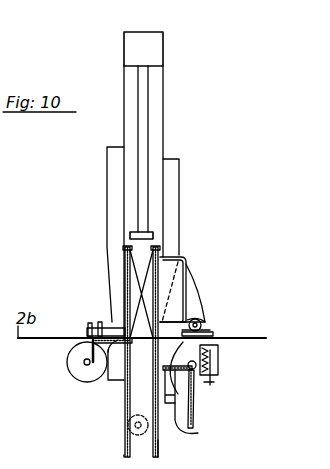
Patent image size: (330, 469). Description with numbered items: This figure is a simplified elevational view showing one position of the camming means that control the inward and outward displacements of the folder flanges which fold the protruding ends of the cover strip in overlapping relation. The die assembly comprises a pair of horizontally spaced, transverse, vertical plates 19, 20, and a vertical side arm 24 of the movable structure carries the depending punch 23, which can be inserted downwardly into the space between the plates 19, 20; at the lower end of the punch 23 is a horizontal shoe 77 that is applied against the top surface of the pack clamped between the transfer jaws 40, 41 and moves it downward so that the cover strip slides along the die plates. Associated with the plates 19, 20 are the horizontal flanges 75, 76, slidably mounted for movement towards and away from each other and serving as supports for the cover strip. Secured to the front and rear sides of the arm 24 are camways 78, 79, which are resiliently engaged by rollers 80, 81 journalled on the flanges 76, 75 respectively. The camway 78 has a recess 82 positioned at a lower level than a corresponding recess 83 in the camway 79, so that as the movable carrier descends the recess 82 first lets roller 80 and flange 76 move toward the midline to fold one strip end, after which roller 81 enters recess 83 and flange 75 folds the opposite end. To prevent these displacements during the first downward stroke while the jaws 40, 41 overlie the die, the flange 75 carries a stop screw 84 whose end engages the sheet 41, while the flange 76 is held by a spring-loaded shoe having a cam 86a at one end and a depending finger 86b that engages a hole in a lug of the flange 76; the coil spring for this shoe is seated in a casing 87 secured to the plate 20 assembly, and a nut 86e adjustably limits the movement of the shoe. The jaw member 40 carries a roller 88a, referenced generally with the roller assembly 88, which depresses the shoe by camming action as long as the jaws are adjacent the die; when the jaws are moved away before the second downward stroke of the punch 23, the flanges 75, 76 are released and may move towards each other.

The vertical side arms 24 is at (124, 115).
The punch 23 is at (140, 192).
The shoe 77 is at (130, 237).
The recess 83 is at (122, 264).
The jaw 41 is at (127, 285).
The stop screw 84 is at (113, 322).
The jaw member 40 is at (158, 257).
The recess 82 is at (183, 308).
The roller 88 is at (203, 318).
The roller 88a is at (207, 318).
The cam 86a is at (208, 335).
The depending finger 86b is at (218, 360).
The casing 87 is at (220, 376).
The nut 86e is at (212, 384).
The roller 80 is at (196, 392).
The horizontal flange 76 is at (184, 437).
The roller 81 is at (83, 360).
The horizontal flange 75 is at (112, 358).
The camway 79 is at (108, 380).
The vertical plate 19 is at (124, 412).
The vertical plate 20 is at (124, 455).
The camway 78 is at (160, 440).